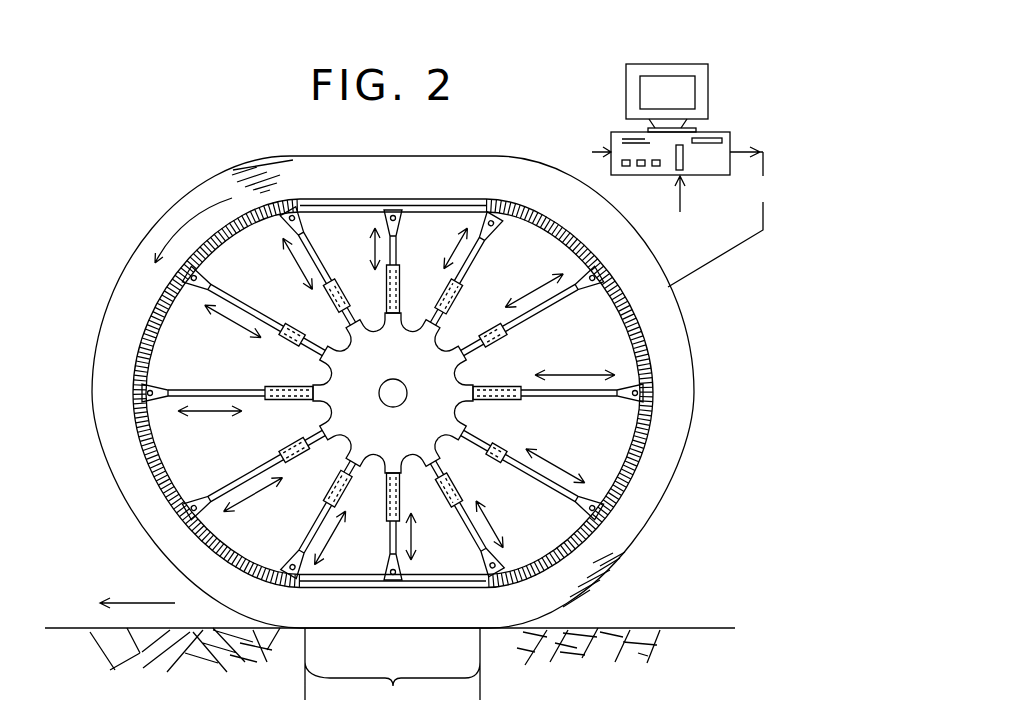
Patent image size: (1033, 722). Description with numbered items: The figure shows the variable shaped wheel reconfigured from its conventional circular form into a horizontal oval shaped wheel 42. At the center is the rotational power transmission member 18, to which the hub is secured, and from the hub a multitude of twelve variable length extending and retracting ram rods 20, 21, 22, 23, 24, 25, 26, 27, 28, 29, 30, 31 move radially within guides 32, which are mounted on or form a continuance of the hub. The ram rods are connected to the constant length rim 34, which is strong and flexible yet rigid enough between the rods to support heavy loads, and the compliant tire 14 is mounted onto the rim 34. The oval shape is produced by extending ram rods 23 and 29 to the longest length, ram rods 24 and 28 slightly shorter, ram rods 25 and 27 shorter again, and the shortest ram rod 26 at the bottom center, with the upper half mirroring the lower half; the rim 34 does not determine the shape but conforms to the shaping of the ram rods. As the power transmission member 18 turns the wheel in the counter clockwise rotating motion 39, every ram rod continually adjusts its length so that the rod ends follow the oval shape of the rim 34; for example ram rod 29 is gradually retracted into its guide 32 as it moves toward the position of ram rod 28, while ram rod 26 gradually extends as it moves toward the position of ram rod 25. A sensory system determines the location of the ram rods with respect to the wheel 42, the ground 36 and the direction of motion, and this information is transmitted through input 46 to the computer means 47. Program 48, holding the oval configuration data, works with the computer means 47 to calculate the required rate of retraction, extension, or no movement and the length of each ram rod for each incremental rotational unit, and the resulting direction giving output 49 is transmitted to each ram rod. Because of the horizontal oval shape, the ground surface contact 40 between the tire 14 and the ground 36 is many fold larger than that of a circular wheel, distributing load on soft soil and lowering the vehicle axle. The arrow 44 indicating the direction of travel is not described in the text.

The compliant tire 14 is at (100, 306).
The rotational power transmission member 18 is at (407, 388).
The ram rod 20 is at (397, 243).
The ram rod 21 is at (478, 257).
The ram rod 22 is at (530, 313).
The ram rod 23 is at (545, 397).
The ram rod 24 is at (536, 476).
The ram rod 25 is at (478, 547).
The ram rod 26 is at (390, 542).
The ram rod 27 is at (317, 527).
The ram rod 28 is at (257, 469).
The ram rod 29 is at (218, 389).
The ram rod 30 is at (249, 312).
The ram rod 31 is at (311, 248).
The guides 32 is at (328, 397).
The rim 34 is at (645, 380).
The ground 36 is at (596, 628).
The counter clockwise rotating motion 39 is at (184, 241).
The ground surface contact 40 is at (392, 666).
The horizontal oval shaped wheel 42 is at (138, 248).
The direction of travel 44 is at (120, 602).
The input 46 is at (587, 152).
The computer means 47 is at (662, 53).
The program 48 is at (680, 205).
The output 49 is at (722, 217).